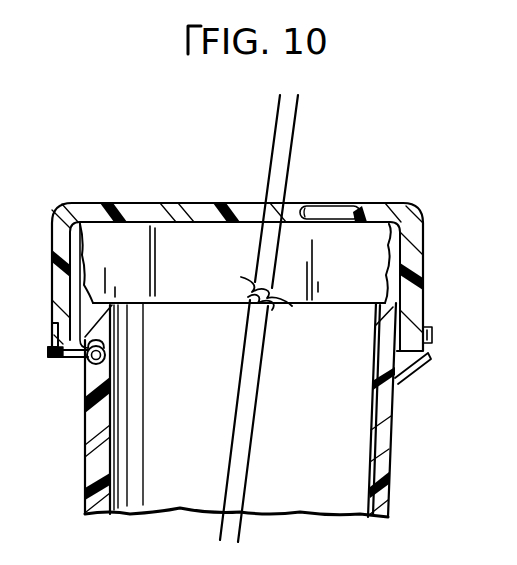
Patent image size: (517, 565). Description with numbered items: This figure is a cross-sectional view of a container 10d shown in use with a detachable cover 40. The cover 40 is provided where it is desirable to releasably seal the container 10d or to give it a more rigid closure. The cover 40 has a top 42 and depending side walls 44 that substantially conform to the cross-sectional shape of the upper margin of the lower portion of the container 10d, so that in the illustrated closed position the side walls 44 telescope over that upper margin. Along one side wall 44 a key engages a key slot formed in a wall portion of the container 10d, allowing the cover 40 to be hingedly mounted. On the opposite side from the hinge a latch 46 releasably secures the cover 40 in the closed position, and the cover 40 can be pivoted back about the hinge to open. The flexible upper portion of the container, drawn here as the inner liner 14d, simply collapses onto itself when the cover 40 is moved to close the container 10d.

The container 10d is at (86, 418).
The liner panel 14d is at (193, 288).
The cover 40 is at (146, 203).
The top 42 is at (240, 205).
The side walls 44 is at (55, 287).
The latch 46 is at (407, 378).